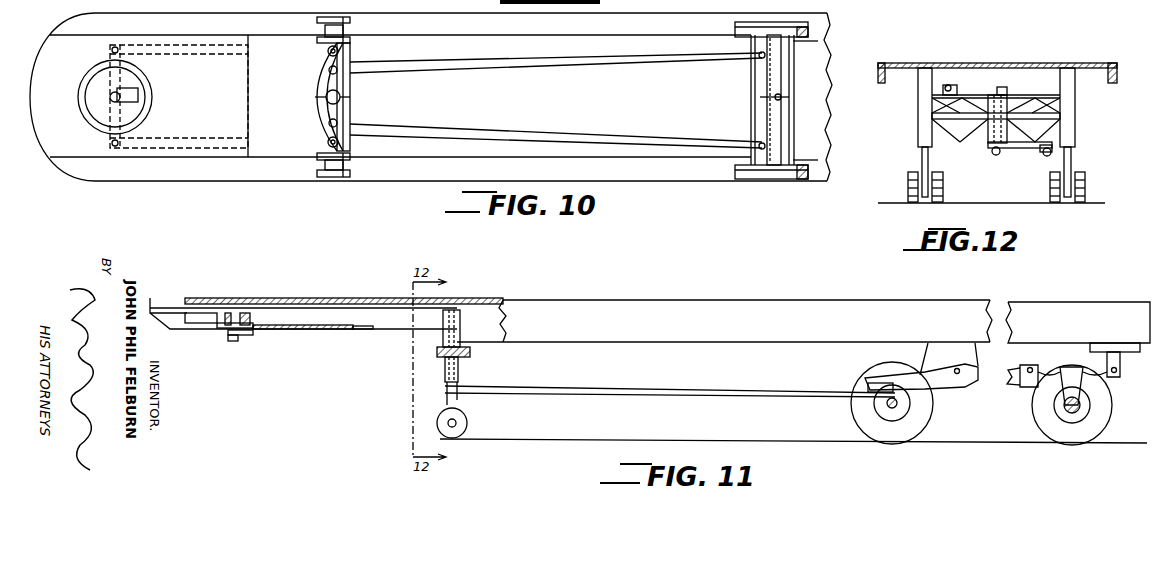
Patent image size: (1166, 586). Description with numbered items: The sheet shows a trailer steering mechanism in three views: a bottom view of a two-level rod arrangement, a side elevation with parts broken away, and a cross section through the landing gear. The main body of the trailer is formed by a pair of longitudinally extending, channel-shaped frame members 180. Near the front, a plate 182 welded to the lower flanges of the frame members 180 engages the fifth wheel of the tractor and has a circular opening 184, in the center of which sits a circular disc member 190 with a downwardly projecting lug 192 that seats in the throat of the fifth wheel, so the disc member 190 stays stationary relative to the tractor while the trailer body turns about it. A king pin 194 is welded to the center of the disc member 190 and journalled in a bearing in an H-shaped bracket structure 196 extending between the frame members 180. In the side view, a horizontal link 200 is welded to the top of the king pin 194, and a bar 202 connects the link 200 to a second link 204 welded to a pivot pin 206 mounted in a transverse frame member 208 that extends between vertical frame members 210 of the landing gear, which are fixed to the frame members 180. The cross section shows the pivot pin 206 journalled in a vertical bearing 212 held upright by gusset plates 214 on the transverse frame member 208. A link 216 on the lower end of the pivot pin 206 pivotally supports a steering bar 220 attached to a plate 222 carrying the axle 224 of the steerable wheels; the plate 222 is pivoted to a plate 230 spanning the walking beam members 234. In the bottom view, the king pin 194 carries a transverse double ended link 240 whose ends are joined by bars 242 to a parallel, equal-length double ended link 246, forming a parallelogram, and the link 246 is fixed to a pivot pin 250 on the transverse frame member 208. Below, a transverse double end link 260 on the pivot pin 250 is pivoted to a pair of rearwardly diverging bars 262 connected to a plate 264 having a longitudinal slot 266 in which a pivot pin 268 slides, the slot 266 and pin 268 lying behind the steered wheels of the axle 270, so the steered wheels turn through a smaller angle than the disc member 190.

In FIG. 12, the frame members 180 is at (932, 86).
In FIG. 11, the frame members 180 is at (498, 320).
In FIG. 10, the plate 182 is at (68, 148).
In FIG. 11, the plate 182 is at (327, 332).
In FIG. 10, the circular opening 184 is at (86, 80).
In FIG. 11, the circular opening 184 is at (272, 330).
In FIG. 10, the circular disc member 190 is at (97, 99).
In FIG. 11, the circular disc member 190 is at (218, 318).
In FIG. 11, the lug 192 is at (250, 338).
In FIG. 10, the king pin 194 is at (118, 102).
In FIG. 11, the king pin 194 is at (235, 342).
In FIG. 11, the H-shaped bracket structure 196 is at (250, 312).
In FIG. 11, the link 200 is at (233, 305).
In FIG. 12, the bar 202 is at (957, 90).
In FIG. 11, the bar 202 is at (365, 304).
In FIG. 12, the second link 204 is at (970, 95).
In FIG. 12, the pivot pin 206 is at (1007, 92).
In FIG. 11, the pivot pin 206 is at (460, 403).
In FIG. 10, the transverse frame member 208 is at (345, 110).
In FIG. 12, the transverse frame member 208 is at (962, 118).
In FIG. 11, the transverse frame member 208 is at (468, 355).
In FIG. 10, the vertical frame members 210 is at (352, 30).
In FIG. 12, the vertical frame members 210 is at (930, 112).
In FIG. 12, the vertical bearing 212 is at (990, 148).
In FIG. 12, the gusset plates 214 is at (1010, 110).
In FIG. 12, the link 216 is at (1025, 150).
In FIG. 11, the steering bar 220 is at (672, 390).
In FIG. 11, the plate 222 is at (910, 405).
In FIG. 11, the axle 224 is at (880, 405).
In FIG. 11, the plate 230 is at (880, 385).
In FIG. 11, the walking beam members 234 is at (923, 370).
In FIG. 10, the transverse double ended link 240 is at (112, 112).
In FIG. 10, the bars 242 is at (275, 50).
In FIG. 10, the double ended transverse link 246 is at (338, 136).
In FIG. 10, the pivot pin 250 is at (340, 95).
In FIG. 10, the transverse double end link 260 is at (333, 84).
In FIG. 10, the bars 262 is at (545, 70).
In FIG. 10, the plate 264 is at (782, 92).
In FIG. 10, the slot 266 is at (787, 98).
In FIG. 10, the pivot pin 268 is at (783, 102).
In FIG. 10, the axle 270 is at (757, 24).